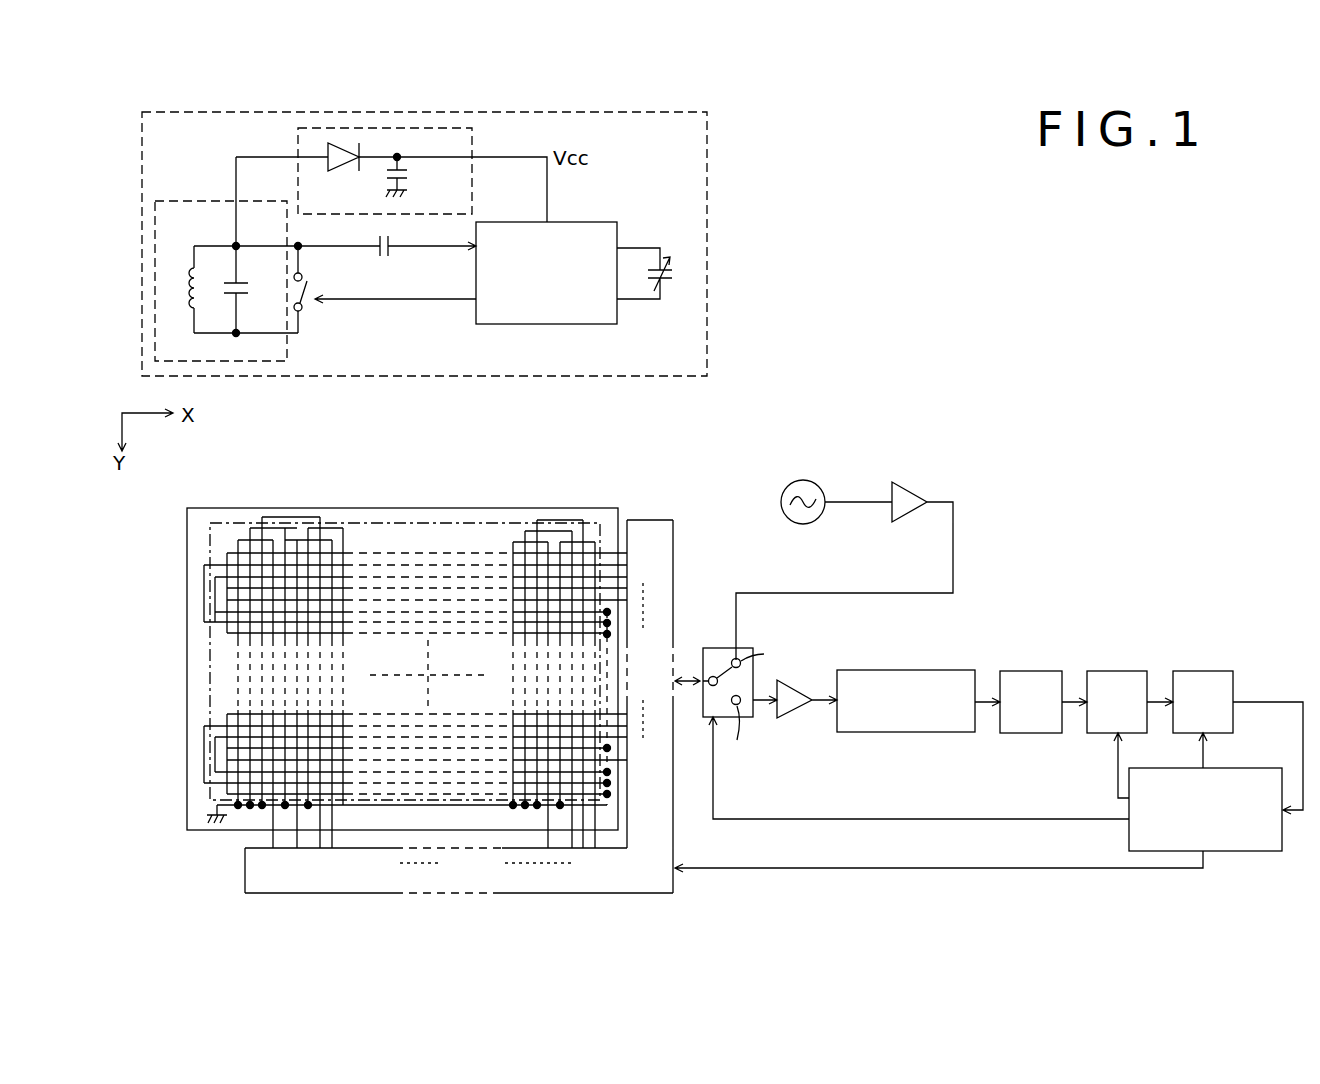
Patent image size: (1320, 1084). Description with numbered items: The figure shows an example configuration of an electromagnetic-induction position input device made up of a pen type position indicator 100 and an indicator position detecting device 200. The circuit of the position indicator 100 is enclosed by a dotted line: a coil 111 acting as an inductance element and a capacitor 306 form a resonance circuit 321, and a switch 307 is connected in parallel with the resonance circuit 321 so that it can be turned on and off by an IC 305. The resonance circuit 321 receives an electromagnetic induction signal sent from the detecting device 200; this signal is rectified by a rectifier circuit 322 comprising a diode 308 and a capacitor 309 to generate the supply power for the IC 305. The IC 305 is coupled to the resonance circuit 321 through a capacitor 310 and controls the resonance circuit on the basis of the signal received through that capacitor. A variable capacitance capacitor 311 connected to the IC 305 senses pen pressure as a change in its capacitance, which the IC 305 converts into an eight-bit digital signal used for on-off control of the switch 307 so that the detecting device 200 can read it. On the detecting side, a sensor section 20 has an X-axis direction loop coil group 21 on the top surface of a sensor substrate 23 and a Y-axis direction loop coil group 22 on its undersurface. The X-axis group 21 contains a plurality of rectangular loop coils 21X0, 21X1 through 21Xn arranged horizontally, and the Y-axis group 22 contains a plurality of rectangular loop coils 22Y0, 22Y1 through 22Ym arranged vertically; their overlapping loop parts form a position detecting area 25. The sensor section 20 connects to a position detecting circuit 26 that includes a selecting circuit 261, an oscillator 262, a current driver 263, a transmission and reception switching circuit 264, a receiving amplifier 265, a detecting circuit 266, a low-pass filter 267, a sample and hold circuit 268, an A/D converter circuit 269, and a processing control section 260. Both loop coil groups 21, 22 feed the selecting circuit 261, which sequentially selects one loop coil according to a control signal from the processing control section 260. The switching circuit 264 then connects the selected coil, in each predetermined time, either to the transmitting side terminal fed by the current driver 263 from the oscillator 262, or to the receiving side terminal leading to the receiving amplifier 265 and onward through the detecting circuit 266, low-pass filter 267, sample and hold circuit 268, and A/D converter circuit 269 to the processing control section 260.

The pen type position indicator 100 is at (707, 160).
The coil 111 is at (190, 266).
The IC 305 is at (588, 222).
The capacitor 306 is at (248, 288).
The switch 307 is at (312, 305).
The diode 308 is at (343, 171).
The capacitor 309 is at (407, 178).
The capacitor 310 is at (386, 257).
The variable capacitance capacitor 311 is at (672, 275).
The resonance circuit 321 is at (188, 200).
The rectifier circuit 322 is at (472, 134).
The sensor section 20 is at (262, 417).
The indicator position detecting device 200 is at (735, 420).
The X-axis direction loop coil group 21 is at (612, 470).
The loop coil 21X0 is at (243, 538).
The loop coil 21X1 is at (291, 527).
The loop coil 21Xn is at (590, 541).
The Y-axis direction loop coil group 22 is at (118, 525).
The loop coil 22Y0 is at (227, 553).
The loop coil 22Y1 is at (204, 586).
The loop coil 22Ym is at (227, 790).
The sensor substrate 23 is at (207, 507).
The position detecting area 25 is at (207, 530).
The position detecting circuit 26 is at (975, 482).
The processing control section 260 is at (1262, 767).
The selecting circuit 261 is at (653, 520).
The oscillator 262 is at (803, 524).
The current driver 263 is at (908, 516).
The transmission and reception switching circuit 264 is at (713, 647).
The receiving amplifier 265 is at (795, 712).
The detecting circuit 266 is at (906, 670).
The low-pass filter 267 is at (1030, 670).
The sample and hold circuit 268 is at (1116, 670).
The A/D converter circuit 269 is at (1202, 670).